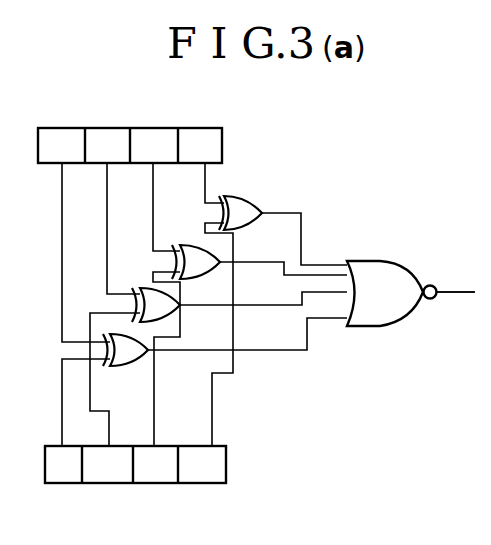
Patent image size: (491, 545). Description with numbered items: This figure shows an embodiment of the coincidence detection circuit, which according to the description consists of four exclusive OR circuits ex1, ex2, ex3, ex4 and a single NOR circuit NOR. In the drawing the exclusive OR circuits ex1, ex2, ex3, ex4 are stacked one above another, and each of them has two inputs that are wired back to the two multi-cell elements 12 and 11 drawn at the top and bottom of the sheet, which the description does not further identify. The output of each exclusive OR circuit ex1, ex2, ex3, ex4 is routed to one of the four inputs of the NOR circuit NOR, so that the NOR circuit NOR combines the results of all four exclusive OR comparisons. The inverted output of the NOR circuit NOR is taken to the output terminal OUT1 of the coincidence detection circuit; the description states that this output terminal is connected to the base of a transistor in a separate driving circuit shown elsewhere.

The first register 12 is at (115, 128).
The second register 11 is at (107, 483).
The exclusive OR circuit ex1 is at (240, 213).
The exclusive OR circuit ex2 is at (196, 262).
The exclusive OR circuit ex3 is at (156, 305).
The exclusive OR circuit ex4 is at (125, 350).
The NOR circuit NOR is at (392, 293).
The output terminal OUT1 is at (457, 278).